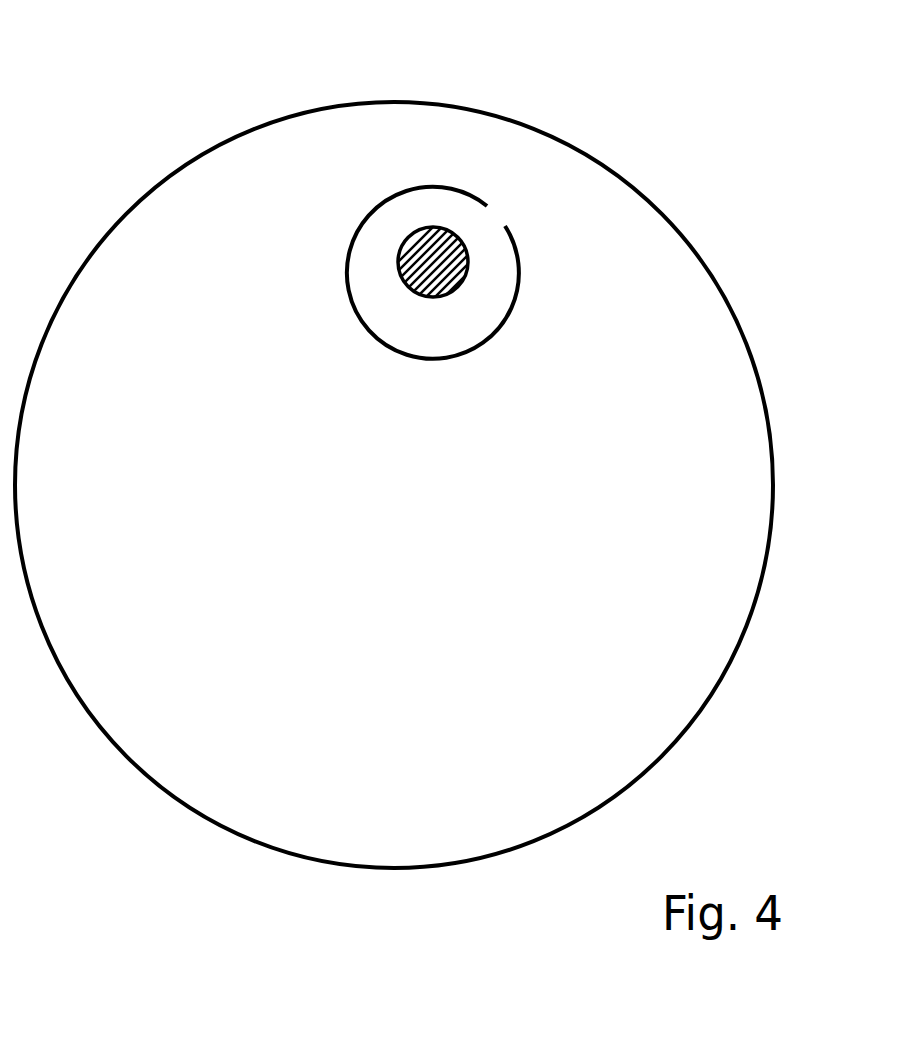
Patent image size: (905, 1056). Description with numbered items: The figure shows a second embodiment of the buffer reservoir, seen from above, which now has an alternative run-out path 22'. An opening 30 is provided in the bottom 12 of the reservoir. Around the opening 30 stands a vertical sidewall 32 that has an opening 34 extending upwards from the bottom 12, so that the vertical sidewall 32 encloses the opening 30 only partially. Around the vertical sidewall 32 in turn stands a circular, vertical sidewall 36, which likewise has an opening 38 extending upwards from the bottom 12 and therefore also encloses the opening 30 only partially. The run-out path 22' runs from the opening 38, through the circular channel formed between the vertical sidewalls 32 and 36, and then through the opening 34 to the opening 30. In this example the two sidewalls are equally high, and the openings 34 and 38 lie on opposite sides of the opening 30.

The bottom 12 is at (578, 173).
The run-out path 22' is at (475, 289).
The opening 30 is at (433, 262).
The vertical sidewall 32 is at (443, 297).
The opening 34 is at (427, 272).
The circular vertical sidewall 36 is at (357, 317).
The opening 38 is at (488, 220).